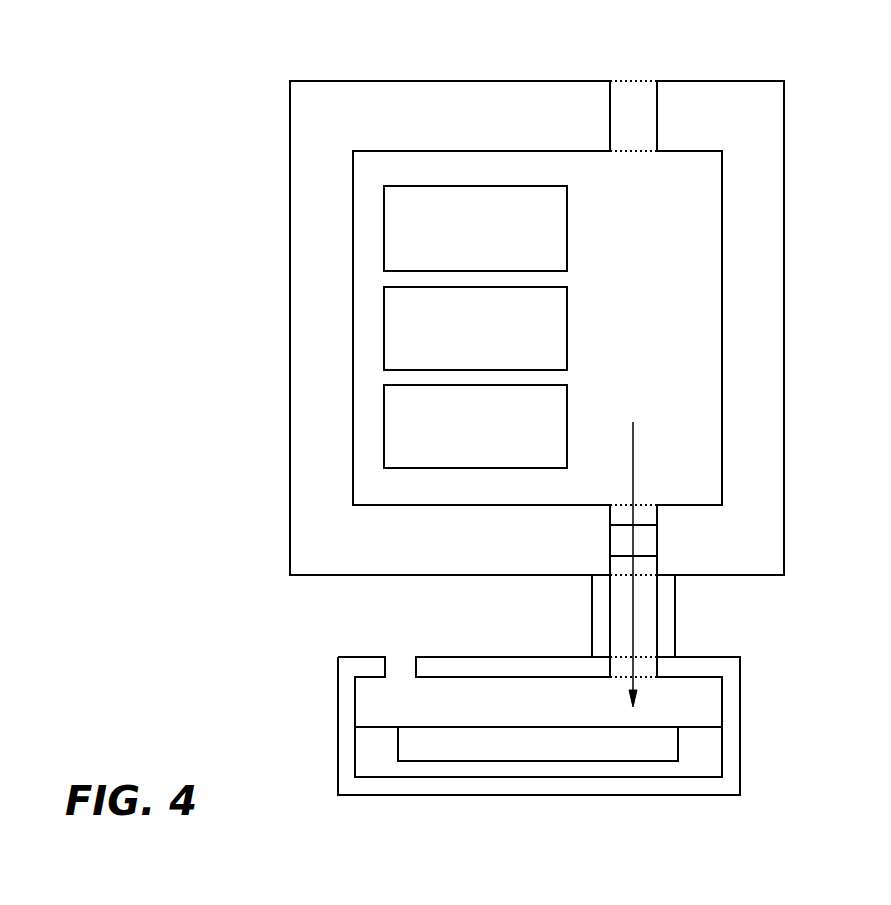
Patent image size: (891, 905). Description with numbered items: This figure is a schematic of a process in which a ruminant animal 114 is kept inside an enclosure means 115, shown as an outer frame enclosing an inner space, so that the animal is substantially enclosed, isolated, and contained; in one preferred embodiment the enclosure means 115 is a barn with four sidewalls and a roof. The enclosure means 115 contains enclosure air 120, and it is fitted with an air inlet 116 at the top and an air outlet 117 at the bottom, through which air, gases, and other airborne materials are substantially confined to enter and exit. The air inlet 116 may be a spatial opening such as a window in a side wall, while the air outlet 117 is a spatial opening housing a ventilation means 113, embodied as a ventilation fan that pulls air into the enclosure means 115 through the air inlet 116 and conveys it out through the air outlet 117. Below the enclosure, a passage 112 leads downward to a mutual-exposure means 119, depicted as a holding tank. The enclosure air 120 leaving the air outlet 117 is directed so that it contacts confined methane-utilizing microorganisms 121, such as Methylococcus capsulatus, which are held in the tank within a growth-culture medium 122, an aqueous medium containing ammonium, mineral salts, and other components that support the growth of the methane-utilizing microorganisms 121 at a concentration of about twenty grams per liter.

The connecting channel 112 is at (666, 613).
The ventilation means 113 is at (650, 543).
The ruminant animal 114 is at (410, 240).
The enclosure means 115 is at (325, 217).
The air inlet 116 is at (641, 127).
The air outlet 117 is at (647, 517).
The mutual-exposure means 119 is at (730, 746).
The enclosure air 120 is at (639, 551).
The methane-utilizing microorganisms 121 is at (422, 742).
The growth-culture medium 122 is at (372, 758).